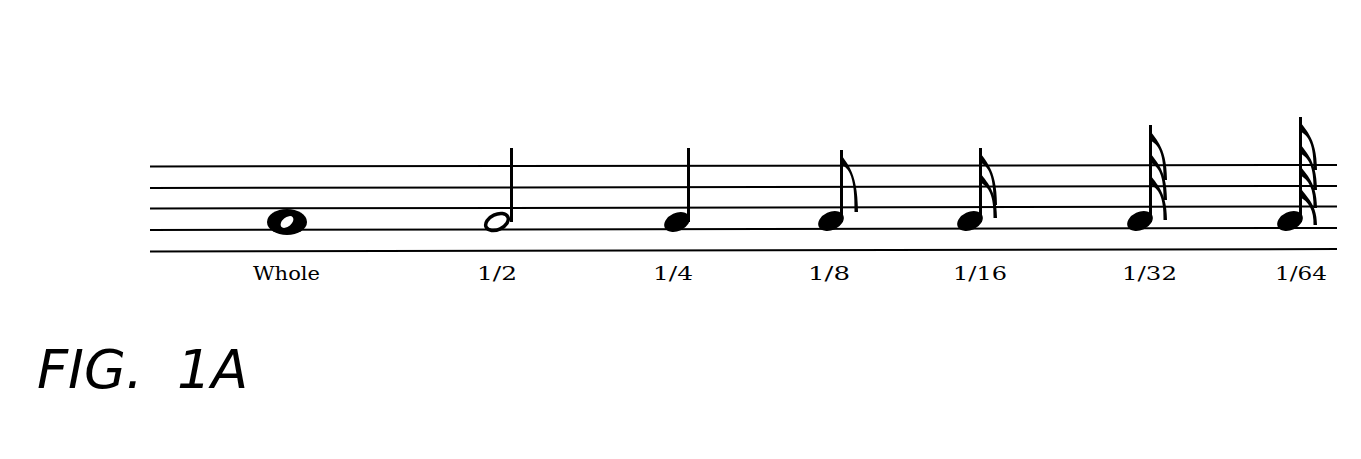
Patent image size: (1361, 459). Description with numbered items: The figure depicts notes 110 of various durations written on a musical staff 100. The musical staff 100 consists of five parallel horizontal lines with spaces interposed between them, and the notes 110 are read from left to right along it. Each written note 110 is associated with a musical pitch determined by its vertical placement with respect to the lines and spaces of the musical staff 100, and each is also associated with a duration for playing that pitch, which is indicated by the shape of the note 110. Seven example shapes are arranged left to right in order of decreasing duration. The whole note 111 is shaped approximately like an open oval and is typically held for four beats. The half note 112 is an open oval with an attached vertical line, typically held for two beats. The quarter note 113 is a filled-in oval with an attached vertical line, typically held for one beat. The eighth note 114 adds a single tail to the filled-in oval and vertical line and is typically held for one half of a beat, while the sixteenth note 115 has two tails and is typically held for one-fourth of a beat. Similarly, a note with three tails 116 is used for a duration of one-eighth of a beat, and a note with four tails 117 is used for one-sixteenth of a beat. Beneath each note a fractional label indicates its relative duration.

The musical staff 100 is at (170, 166).
The notes 110 is at (690, 150).
The whole note 111 is at (291, 208).
The half note 112 is at (512, 150).
The quarter note 113 is at (690, 152).
The eighth note 114 is at (842, 153).
The sixteenth note 115 is at (981, 153).
The thirty-second note 116 is at (1150, 128).
The sixty-fourth note 117 is at (1300, 123).